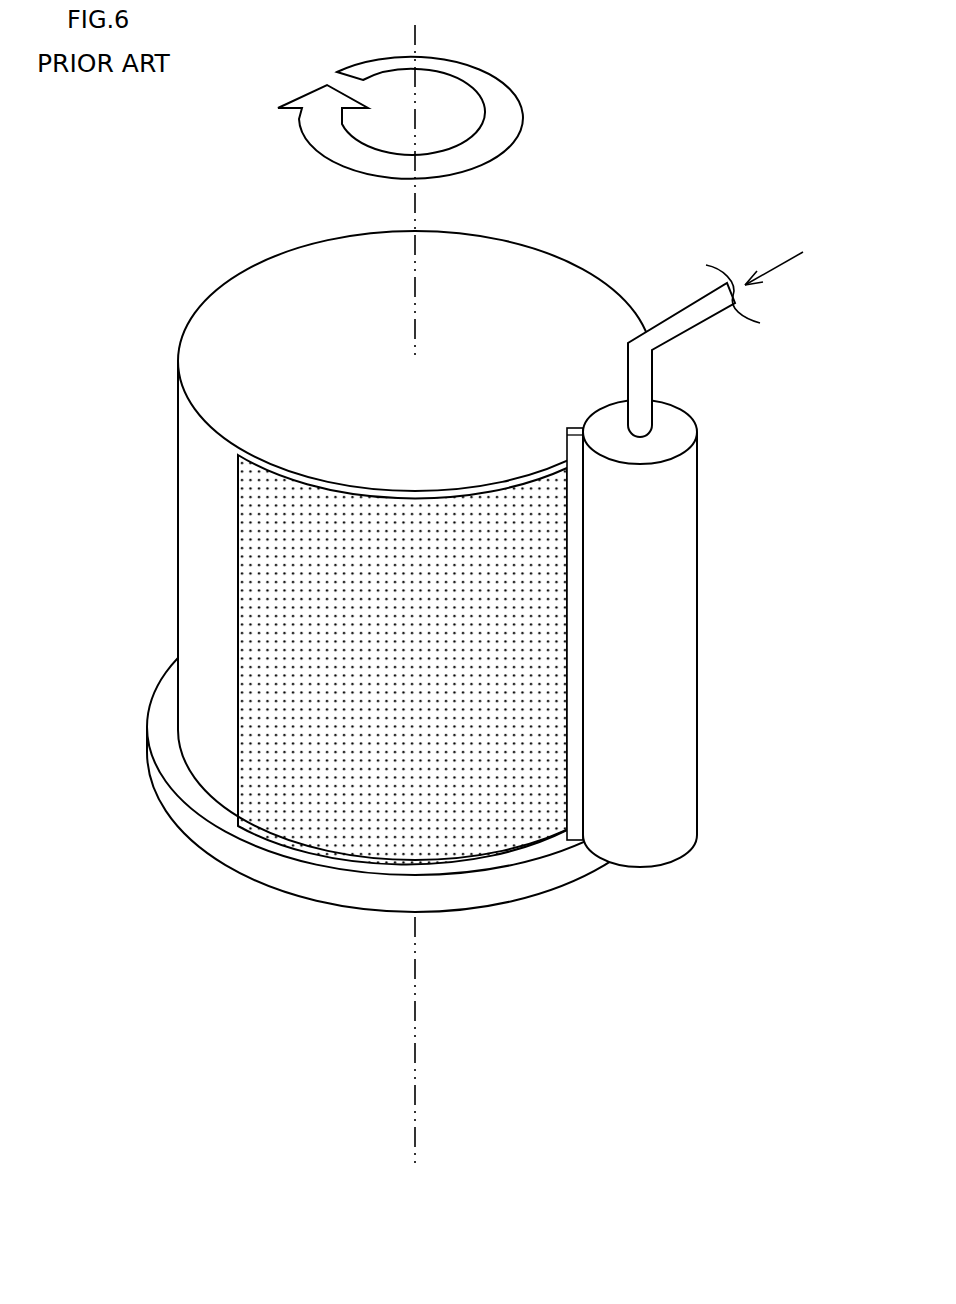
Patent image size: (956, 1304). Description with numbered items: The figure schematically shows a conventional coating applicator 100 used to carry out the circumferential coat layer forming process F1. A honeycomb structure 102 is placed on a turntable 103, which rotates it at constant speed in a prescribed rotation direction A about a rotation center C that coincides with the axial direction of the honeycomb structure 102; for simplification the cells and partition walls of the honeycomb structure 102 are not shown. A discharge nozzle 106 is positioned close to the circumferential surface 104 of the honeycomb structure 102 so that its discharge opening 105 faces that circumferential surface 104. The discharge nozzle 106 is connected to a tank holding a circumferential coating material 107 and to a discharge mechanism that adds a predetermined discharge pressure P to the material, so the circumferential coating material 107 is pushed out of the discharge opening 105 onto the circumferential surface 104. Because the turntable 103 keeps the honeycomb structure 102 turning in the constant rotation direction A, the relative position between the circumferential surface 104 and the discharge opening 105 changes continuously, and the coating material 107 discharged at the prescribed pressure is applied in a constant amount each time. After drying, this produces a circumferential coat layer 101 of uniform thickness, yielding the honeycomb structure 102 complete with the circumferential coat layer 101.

The coating applicator 100 is at (452, 520).
The circumferential coat layer 101 is at (402, 615).
The circumferential coating material 107 is at (318, 486).
The honeycomb structure 102 is at (503, 248).
The turntable 103 is at (427, 902).
The circumferential surface 104 is at (182, 500).
The discharge opening 105 is at (567, 447).
The discharge nozzle 106 is at (740, 465).
The rotation direction A is at (481, 76).
The rotation center C is at (415, 287).
The discharge pressure P is at (803, 255).
The circumferential coat layer forming process F1 is at (213, 254).